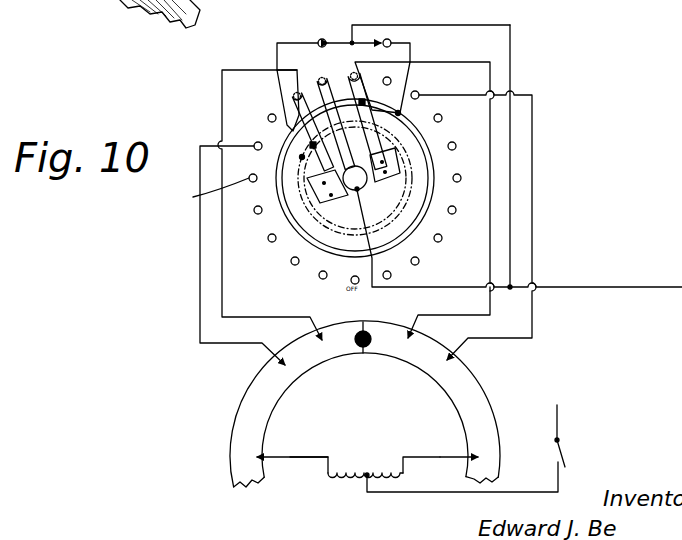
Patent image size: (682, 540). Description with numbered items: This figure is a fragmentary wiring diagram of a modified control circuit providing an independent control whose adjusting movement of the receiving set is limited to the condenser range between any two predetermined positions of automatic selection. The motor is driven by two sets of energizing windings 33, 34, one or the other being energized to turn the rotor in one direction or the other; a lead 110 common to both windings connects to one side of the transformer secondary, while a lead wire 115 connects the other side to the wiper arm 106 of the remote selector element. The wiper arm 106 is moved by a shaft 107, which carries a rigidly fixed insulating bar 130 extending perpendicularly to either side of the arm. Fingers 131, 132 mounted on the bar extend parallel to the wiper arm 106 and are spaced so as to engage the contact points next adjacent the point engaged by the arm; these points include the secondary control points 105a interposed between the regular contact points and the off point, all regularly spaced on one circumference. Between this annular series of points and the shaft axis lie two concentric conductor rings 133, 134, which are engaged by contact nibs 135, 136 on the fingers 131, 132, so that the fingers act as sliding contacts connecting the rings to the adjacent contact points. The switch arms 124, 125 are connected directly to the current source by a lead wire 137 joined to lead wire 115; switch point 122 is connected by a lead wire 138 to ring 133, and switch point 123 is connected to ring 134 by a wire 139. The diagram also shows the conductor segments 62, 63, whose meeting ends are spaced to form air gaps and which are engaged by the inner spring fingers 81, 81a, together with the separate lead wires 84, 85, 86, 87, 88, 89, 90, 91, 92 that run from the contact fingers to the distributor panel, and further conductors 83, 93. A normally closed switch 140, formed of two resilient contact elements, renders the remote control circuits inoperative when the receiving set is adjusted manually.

The energizing winding 33 is at (347, 467).
The energizing winding 34 is at (390, 463).
The conductor segment 62 is at (468, 408).
The conductor segment 63 is at (242, 420).
The inner spring finger 81 is at (257, 453).
The inner spring finger 81a is at (477, 453).
The conductor 83 is at (307, 455).
The lead wire 84 is at (292, 264).
The lead wire 85 is at (254, 213).
The lead wire 86 is at (243, 143).
The lead wire 87 is at (258, 65).
The lead wire 88 is at (368, 65).
The lead wire 89 is at (450, 95).
The lead wire 90 is at (456, 148).
The lead wire 91 is at (456, 212).
The lead wire 92 is at (419, 262).
The conductor 93 is at (418, 455).
The secondary control point 105a is at (446, 107).
The wiper arm 106 is at (363, 184).
The shaft 107 is at (353, 182).
The lead 110 is at (560, 412).
The lead wire 115 is at (448, 288).
The contact point 122 is at (322, 39).
The contact point 123 is at (391, 41).
The switch arm 124 is at (348, 41).
The switch arm 125 is at (377, 25).
The bar 130 is at (398, 178).
The finger 131 is at (298, 100).
The finger 132 is at (395, 143).
The conductor ring 133 is at (317, 217).
The conductor ring 134 is at (281, 197).
The contact nib 135 is at (283, 157).
The contact nib 136 is at (363, 100).
The lead wire 137 is at (512, 48).
The lead wire 138 is at (275, 50).
The wire 139 is at (412, 53).
The switch 140 is at (568, 448).